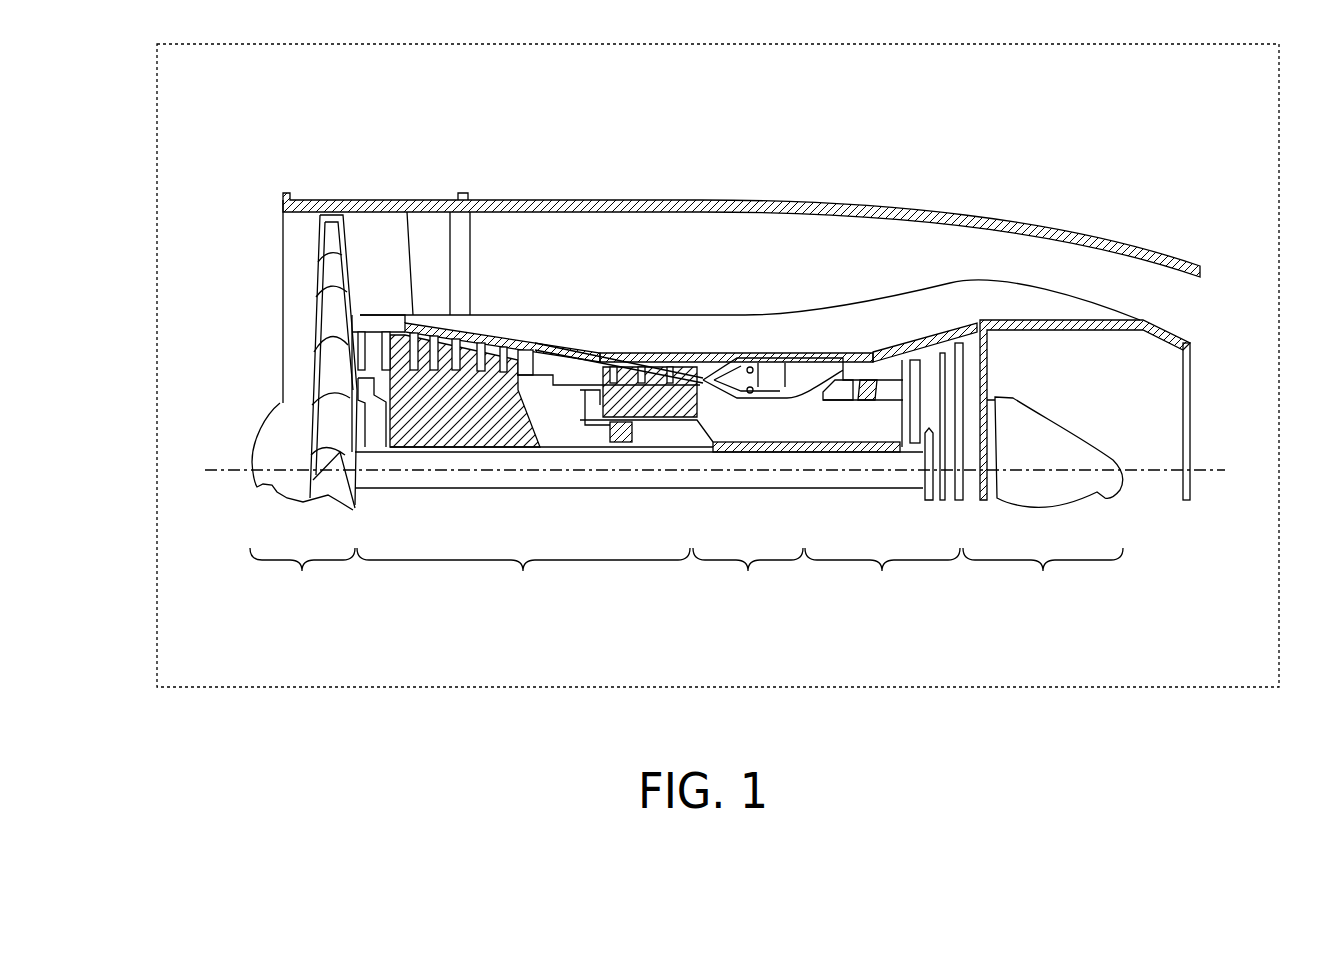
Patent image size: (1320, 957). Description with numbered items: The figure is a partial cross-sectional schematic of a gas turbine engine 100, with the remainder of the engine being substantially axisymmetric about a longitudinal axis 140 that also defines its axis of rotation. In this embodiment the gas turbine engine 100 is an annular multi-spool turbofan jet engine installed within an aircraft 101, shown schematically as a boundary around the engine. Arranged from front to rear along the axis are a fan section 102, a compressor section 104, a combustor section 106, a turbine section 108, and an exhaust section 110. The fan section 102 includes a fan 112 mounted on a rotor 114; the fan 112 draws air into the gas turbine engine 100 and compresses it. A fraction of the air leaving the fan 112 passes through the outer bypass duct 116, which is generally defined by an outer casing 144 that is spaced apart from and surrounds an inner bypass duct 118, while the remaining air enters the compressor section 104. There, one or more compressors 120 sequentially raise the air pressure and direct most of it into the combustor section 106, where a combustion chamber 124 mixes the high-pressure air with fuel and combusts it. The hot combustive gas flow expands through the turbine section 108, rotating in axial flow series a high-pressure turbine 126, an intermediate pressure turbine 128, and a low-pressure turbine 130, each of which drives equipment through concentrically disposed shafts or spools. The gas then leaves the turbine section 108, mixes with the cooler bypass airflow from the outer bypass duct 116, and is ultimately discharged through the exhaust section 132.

The gas turbine engine 100 is at (306, 143).
The aircraft 101 is at (237, 43).
The fan section 102 is at (302, 463).
The compressor section 104 is at (525, 463).
The combustor section 106 is at (736, 482).
The turbine section 108 is at (845, 467).
The exhaust section 110 is at (1076, 465).
The fan 112 is at (333, 307).
The rotor 114 is at (353, 497).
The outer bypass duct 116 is at (723, 227).
The inner bypass duct 118 is at (745, 323).
The compressor 120 is at (482, 418).
The combustion chamber 124 is at (843, 352).
The high-pressure turbine 126 is at (870, 362).
The intermediate pressure turbine 128 is at (905, 375).
The low-pressure turbine 130 is at (963, 333).
The exhaust section 132 is at (1160, 428).
The longitudinal axis 140 is at (220, 470).
The outer casing 144 is at (830, 207).